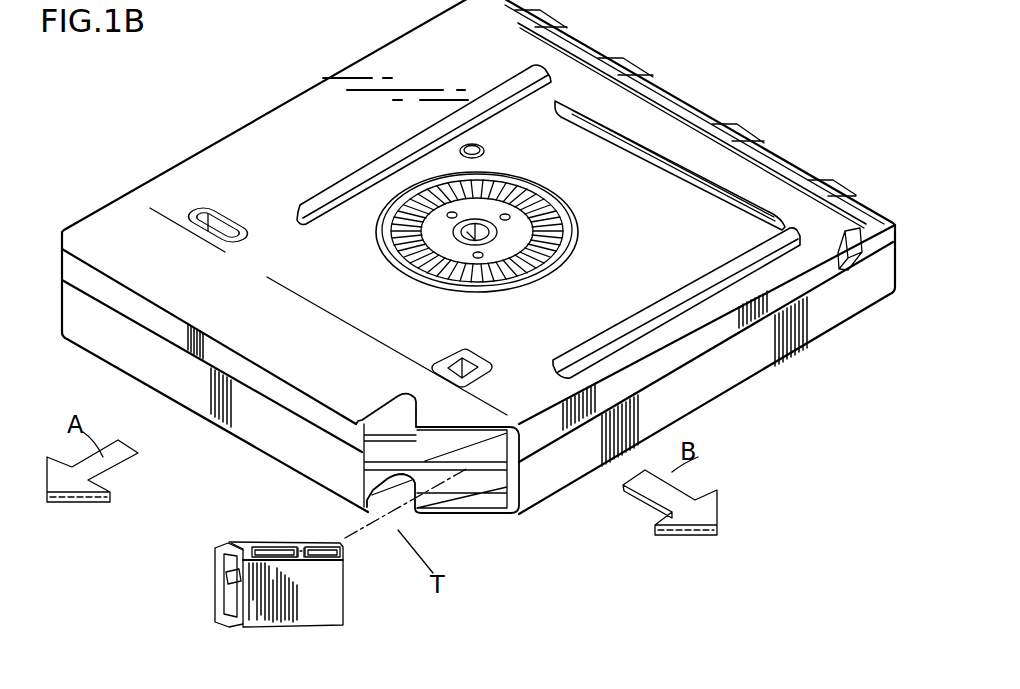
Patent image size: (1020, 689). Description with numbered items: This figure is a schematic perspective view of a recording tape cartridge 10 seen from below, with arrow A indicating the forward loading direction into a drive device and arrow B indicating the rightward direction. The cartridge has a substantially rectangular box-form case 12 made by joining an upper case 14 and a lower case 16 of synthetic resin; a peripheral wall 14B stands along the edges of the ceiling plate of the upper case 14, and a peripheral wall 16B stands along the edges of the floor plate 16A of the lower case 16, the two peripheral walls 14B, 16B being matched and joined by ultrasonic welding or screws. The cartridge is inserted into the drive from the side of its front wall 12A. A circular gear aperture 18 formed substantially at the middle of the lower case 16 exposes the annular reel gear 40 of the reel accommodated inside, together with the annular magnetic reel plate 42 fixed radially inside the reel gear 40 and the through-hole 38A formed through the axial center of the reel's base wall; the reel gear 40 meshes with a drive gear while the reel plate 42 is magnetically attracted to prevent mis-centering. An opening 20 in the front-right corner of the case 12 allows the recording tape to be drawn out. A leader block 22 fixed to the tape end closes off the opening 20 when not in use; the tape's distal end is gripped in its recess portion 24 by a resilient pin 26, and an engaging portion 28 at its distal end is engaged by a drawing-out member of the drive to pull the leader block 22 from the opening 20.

The recording tape cartridge 10 is at (818, 177).
The case 12 is at (157, 172).
The front wall 12A is at (277, 385).
The upper case 14 is at (64, 311).
The peripheral wall 14B is at (690, 378).
The lower case 16 is at (64, 266).
The floor plate 16A is at (257, 157).
The peripheral wall 16B is at (690, 335).
The gear aperture 18 is at (578, 231).
The opening 20 is at (567, 201).
The leader block 22 is at (318, 600).
The recess portion 24 is at (299, 551).
The resilient pin 26 is at (302, 549).
The engaging portion 28 is at (233, 598).
The through-hole 38A is at (487, 237).
The reel gear 40 is at (420, 188).
The reel plate 42 is at (497, 210).